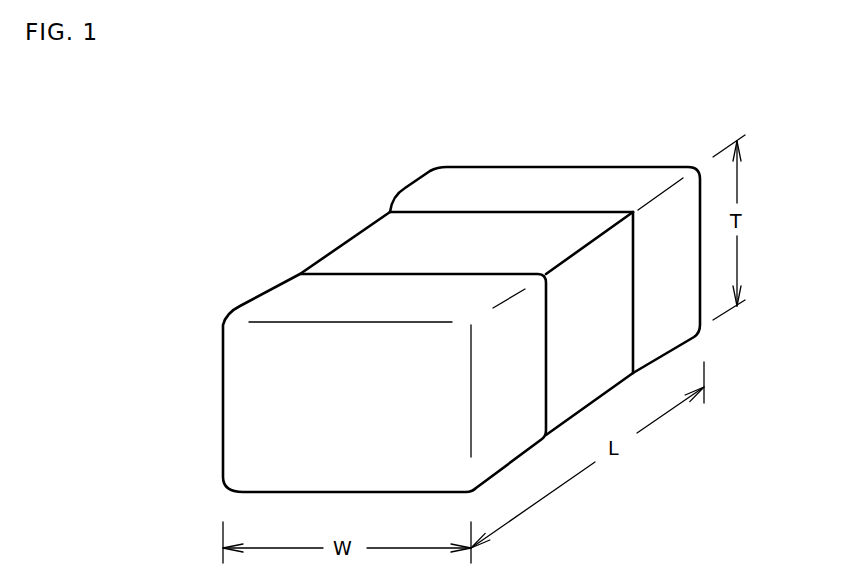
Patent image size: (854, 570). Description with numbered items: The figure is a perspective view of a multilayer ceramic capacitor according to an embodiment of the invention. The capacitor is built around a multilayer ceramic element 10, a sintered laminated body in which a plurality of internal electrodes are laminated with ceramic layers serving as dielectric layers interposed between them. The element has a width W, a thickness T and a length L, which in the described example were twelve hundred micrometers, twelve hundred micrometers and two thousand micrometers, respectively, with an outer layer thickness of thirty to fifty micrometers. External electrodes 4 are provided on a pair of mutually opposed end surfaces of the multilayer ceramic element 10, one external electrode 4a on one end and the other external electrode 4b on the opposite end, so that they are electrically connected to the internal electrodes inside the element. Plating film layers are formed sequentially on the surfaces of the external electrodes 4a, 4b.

The multilayer ceramic element 10 is at (352, 238).
The external electrode 4 is at (392, 283).
The external electrode 4a is at (303, 390).
The external electrode 4b is at (540, 166).